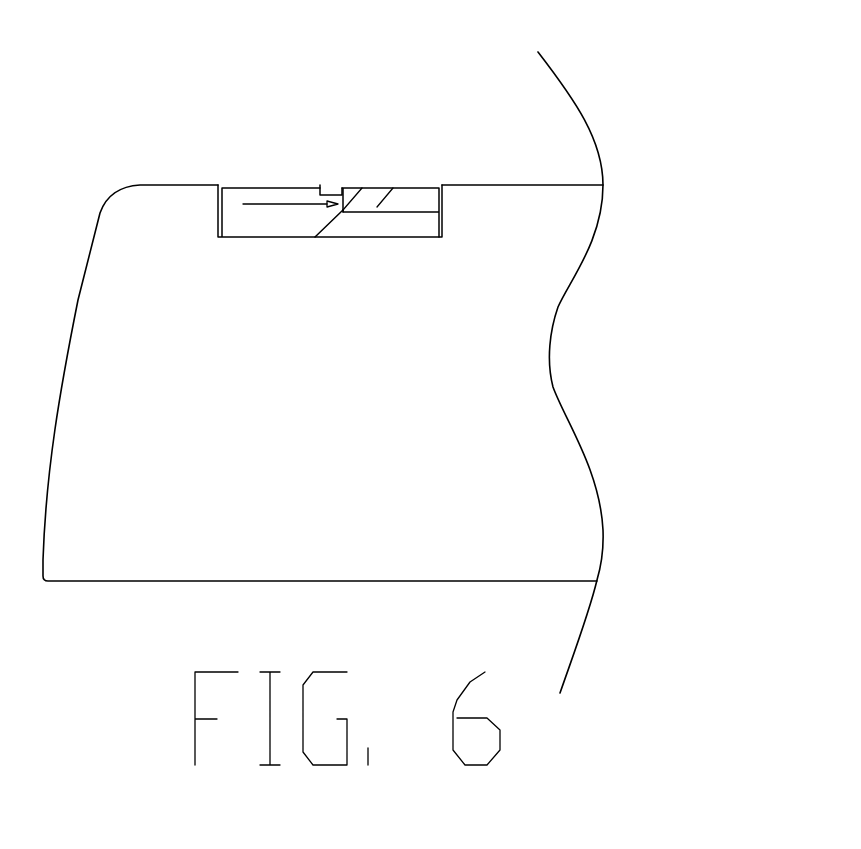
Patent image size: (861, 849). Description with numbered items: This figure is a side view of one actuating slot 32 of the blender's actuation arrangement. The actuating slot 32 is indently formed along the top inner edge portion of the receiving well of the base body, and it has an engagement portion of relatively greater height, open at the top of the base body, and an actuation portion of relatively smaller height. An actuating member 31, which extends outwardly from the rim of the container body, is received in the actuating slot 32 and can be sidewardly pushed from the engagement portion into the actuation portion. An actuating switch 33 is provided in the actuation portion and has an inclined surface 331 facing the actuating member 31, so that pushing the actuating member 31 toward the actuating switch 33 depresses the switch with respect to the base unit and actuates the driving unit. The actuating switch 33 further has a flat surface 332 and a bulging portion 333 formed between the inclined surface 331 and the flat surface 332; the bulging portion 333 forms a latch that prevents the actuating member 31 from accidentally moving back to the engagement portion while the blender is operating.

The actuating member 31 is at (375, 190).
The actuating slot 32 is at (296, 152).
The actuating switch 33 is at (422, 224).
The inclined surface 331 is at (314, 208).
The flat surface 332 is at (409, 197).
The bulging portion 333 is at (363, 228).